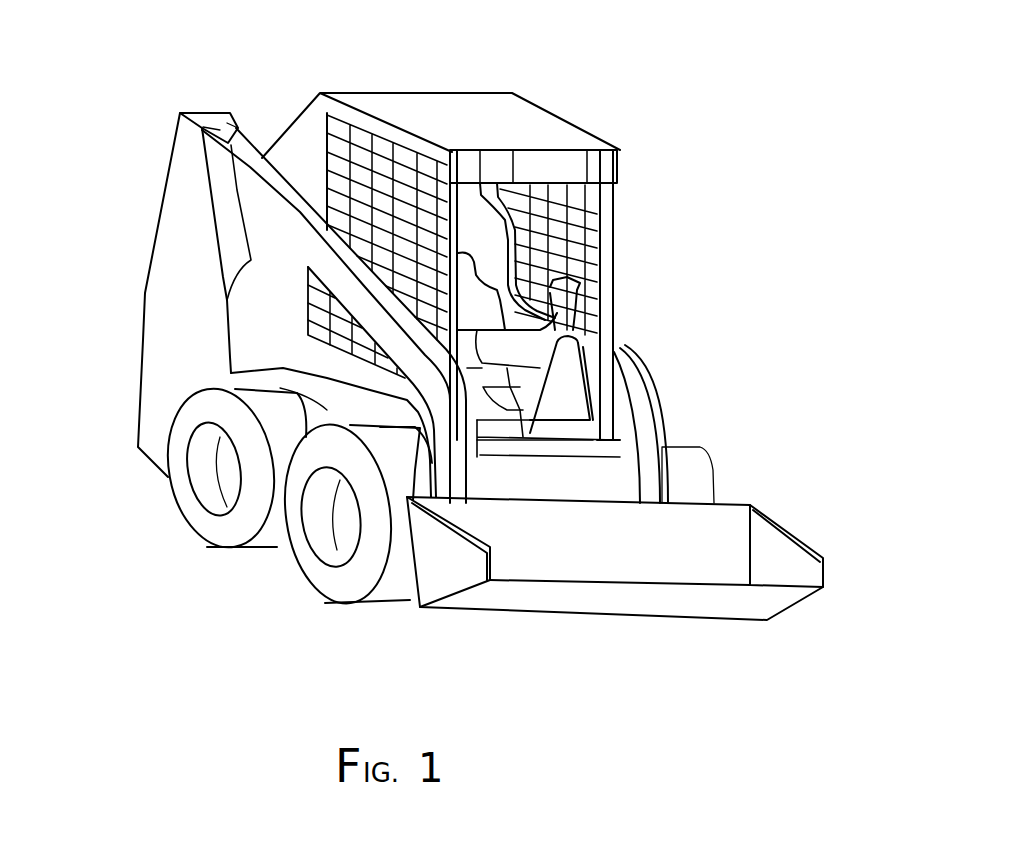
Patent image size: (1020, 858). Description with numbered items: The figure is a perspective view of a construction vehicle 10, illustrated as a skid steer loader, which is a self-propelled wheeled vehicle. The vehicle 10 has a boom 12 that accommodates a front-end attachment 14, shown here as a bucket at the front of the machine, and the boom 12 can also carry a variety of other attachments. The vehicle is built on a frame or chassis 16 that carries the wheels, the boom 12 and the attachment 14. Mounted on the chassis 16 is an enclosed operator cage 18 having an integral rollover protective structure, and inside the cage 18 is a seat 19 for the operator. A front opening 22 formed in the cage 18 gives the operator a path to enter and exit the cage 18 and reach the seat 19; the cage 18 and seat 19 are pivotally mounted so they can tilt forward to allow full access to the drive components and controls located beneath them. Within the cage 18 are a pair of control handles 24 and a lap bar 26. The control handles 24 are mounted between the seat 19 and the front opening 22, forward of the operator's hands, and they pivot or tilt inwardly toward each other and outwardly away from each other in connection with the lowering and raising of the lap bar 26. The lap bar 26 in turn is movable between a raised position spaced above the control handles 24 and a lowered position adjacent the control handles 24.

The construction vehicle 10 is at (701, 170).
The boom 12 is at (323, 262).
The front-end attachment 14 is at (765, 550).
The frame or chassis 16 is at (231, 373).
The operator cage 18 is at (593, 265).
The seat 19 is at (495, 413).
The front opening 22 is at (533, 173).
The control handles 24 is at (578, 336).
The lap bar 26 is at (567, 370).